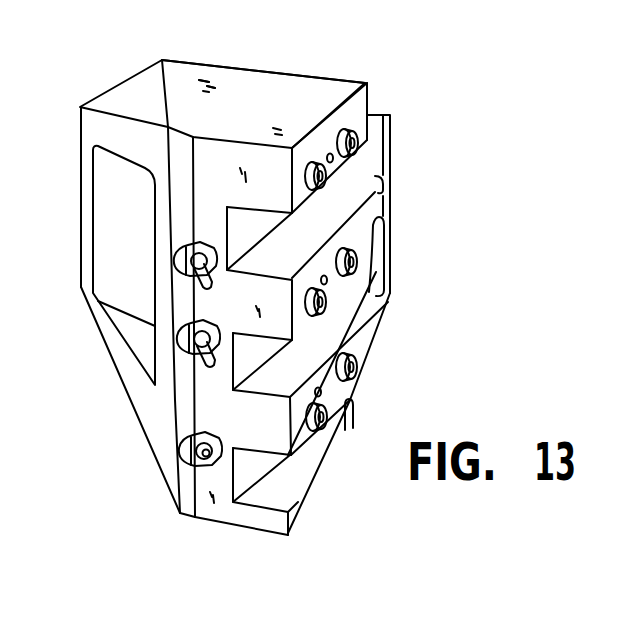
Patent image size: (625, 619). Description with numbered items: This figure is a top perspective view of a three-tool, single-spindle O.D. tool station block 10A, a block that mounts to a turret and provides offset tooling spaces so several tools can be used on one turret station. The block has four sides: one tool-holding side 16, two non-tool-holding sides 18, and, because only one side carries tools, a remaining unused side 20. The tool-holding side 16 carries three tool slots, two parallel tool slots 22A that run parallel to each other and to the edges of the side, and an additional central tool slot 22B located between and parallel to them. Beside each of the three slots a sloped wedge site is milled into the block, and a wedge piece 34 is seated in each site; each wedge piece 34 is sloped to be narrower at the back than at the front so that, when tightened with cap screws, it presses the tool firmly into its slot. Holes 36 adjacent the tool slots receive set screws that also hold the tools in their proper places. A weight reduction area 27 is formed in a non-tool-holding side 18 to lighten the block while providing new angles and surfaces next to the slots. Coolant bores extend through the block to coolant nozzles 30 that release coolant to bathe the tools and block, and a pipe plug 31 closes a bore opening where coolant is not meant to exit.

The O.D. tool station block 10A is at (357, 58).
The tool-holding side 16 is at (389, 322).
The non-tool-holding side 18 is at (223, 80).
The unused side 20 is at (143, 395).
The tool slot 22A is at (347, 177).
The central tool slot 22B is at (360, 282).
The weight reduction area 27 is at (112, 242).
The coolant nozzle 30 is at (188, 470).
The pipe plug 31 is at (225, 109).
The wedge piece 34 is at (327, 148).
The hole for set screw 36 is at (352, 130).